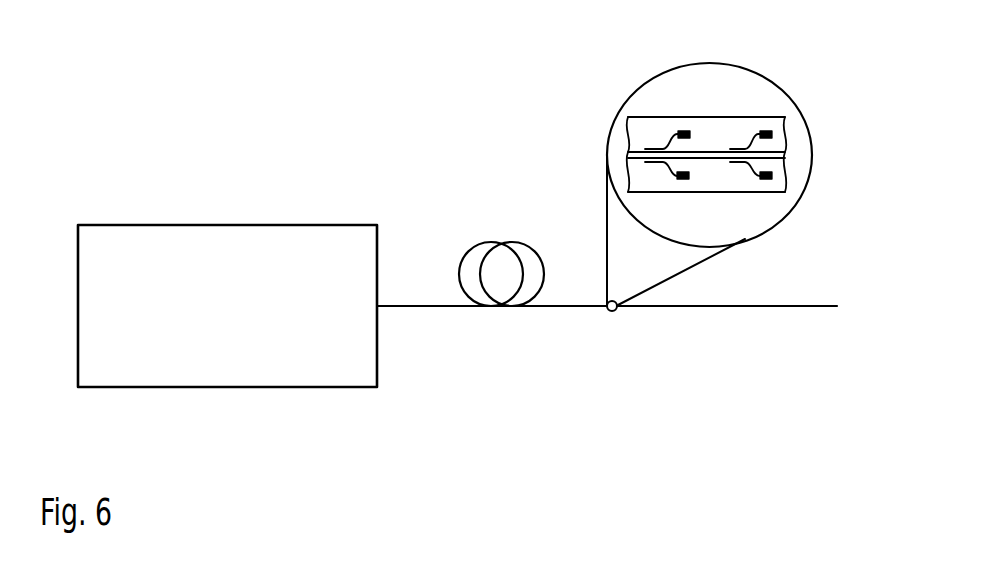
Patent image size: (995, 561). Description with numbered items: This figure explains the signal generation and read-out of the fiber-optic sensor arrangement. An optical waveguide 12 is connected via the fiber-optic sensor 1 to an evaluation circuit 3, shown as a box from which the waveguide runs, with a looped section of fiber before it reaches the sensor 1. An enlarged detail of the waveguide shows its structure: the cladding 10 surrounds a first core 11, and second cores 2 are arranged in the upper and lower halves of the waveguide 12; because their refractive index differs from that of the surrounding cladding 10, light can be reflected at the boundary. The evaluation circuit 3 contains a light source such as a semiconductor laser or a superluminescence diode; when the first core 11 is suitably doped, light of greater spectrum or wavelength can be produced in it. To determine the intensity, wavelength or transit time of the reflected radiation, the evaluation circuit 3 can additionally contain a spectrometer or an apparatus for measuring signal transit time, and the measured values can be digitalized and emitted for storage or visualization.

The fiber-optic sensor 1 is at (612, 312).
The second core 2 is at (770, 181).
The evaluation circuit 3 is at (212, 373).
The cladding 10 is at (775, 123).
The core 11 is at (780, 155).
The optical waveguide 12 is at (780, 308).